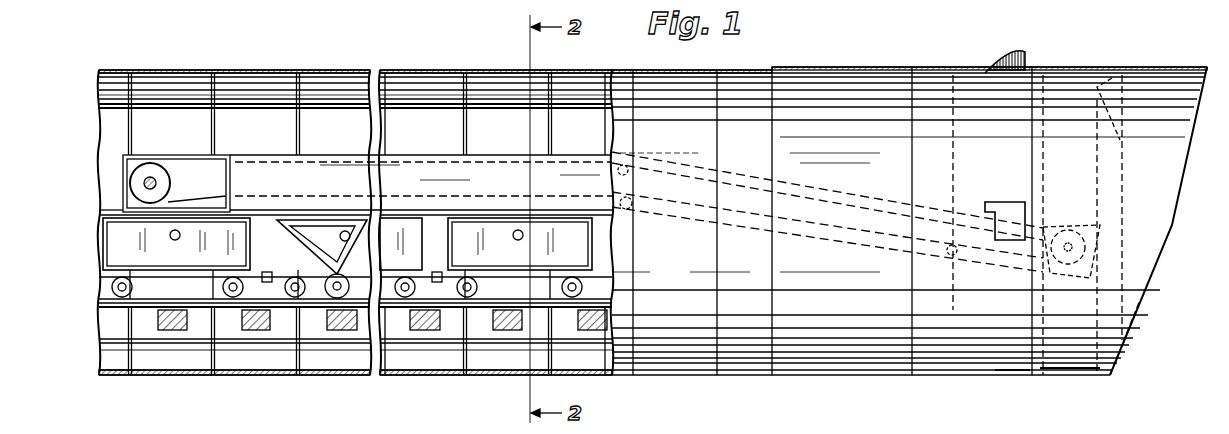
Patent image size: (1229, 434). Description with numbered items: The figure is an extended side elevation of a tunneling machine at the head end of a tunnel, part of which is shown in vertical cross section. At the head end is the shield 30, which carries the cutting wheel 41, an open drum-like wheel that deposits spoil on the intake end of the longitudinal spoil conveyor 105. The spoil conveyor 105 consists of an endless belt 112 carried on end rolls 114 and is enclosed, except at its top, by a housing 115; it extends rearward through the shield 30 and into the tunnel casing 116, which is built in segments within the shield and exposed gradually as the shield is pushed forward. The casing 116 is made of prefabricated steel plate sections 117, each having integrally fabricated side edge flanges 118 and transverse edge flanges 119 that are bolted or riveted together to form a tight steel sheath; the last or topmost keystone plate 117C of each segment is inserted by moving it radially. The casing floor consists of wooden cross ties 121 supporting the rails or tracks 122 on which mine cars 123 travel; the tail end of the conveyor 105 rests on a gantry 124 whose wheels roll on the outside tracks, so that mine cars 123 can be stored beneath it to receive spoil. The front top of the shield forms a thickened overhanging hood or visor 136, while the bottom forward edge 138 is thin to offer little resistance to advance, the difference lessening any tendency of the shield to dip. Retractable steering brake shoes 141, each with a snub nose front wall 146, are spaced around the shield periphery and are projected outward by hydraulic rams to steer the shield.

The shield 30 is at (1071, 66).
The cutting wheel 41 is at (1110, 117).
The spoil conveyor 105 is at (557, 178).
The endless belt 112 is at (222, 170).
The end rolls 114 is at (163, 184).
The housing 115 is at (319, 172).
The tunnel casing 116 is at (410, 66).
The steel plate sections 117 is at (318, 68).
The keystone plate 117C is at (479, 429).
The side edge flanges 118 is at (211, 128).
The transverse edge flanges 119 is at (270, 104).
The wooden cross ties 121 is at (336, 330).
The rails or tracks 122 is at (197, 304).
The mine cars 123 is at (470, 251).
The gantry 124 is at (335, 224).
The overhanging hood or visor 136 is at (1194, 70).
The bottom forward edge 138 is at (1108, 377).
The steering brake shoes 141 is at (1004, 62).
The snub nose front wall 146 is at (1026, 62).